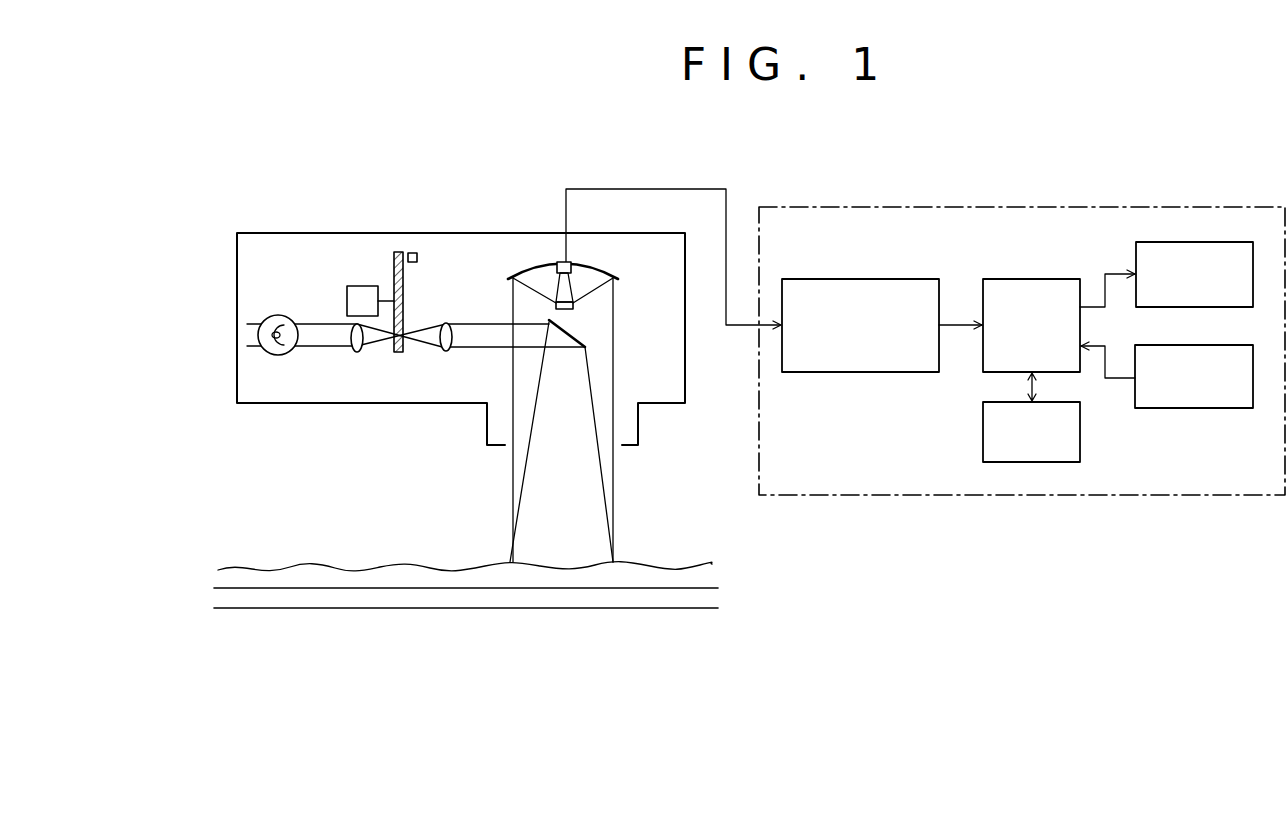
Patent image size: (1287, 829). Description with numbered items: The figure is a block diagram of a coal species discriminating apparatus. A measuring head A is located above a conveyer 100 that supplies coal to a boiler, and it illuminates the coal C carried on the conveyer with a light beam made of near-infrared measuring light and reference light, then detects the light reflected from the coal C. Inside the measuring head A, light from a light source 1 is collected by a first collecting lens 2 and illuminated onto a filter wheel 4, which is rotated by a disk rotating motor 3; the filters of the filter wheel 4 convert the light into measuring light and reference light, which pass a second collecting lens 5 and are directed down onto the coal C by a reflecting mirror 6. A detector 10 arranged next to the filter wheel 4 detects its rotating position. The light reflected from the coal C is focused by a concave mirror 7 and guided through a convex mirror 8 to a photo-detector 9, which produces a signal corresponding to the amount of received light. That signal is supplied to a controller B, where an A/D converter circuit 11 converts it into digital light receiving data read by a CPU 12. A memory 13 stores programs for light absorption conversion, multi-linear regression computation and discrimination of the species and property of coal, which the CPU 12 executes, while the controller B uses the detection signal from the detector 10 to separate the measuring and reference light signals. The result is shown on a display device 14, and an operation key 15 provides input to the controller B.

The measuring head A is at (516, 235).
The controller B is at (862, 207).
The coal C is at (378, 565).
The light source 1 is at (276, 315).
The first collecting lens 2 is at (352, 349).
The disk rotating motor 3 is at (357, 286).
The filter wheel 4 is at (403, 288).
The second collecting lens 5 is at (455, 337).
The reflecting mirror 6 is at (575, 336).
The concave mirror 7 is at (598, 270).
The convex mirror 8 is at (575, 305).
The photo-detector 9 is at (567, 262).
The detector 10 is at (415, 252).
The A/D converter circuit 11 is at (857, 279).
The CPU 12 is at (1028, 279).
The memory 13 is at (983, 437).
The display device 14 is at (1200, 242).
The operation key 15 is at (1180, 408).
The conveyer 100 is at (525, 598).